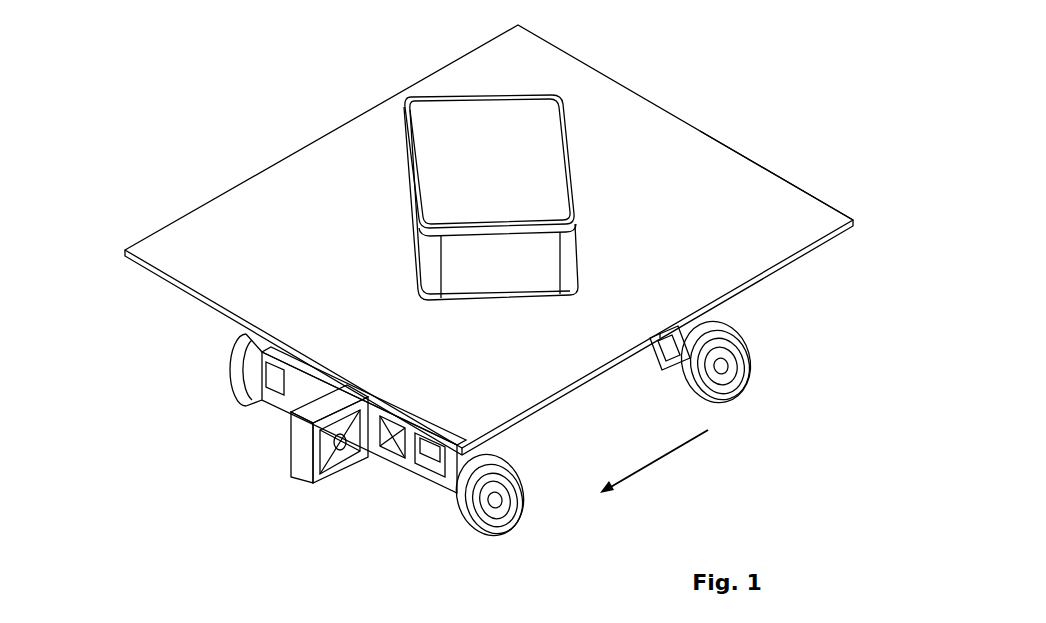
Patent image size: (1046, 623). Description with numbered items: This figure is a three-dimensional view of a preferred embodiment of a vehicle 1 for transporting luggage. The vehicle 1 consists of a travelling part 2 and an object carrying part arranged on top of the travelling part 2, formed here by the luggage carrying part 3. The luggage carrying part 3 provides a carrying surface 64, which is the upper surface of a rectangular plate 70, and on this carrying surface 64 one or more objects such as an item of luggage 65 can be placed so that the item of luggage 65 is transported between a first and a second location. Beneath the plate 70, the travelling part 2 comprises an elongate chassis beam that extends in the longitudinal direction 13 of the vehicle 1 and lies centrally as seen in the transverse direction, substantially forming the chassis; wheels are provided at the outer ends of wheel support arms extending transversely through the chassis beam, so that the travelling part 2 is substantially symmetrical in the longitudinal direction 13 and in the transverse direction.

The vehicle 1 is at (172, 124).
The travelling part 2 is at (241, 473).
The luggage carrying part 3 is at (88, 227).
The longitudinal direction 13 is at (663, 455).
The carrying surface 64 is at (608, 110).
The items of luggage 65 is at (482, 123).
The rectangular plate 70 is at (785, 181).